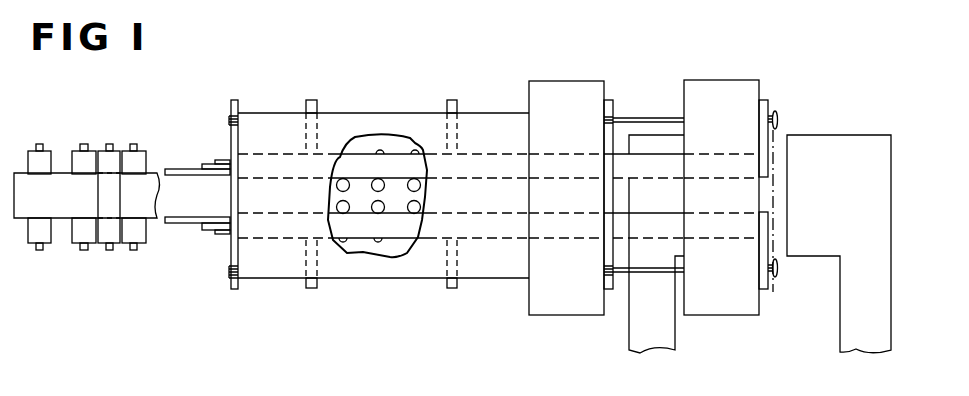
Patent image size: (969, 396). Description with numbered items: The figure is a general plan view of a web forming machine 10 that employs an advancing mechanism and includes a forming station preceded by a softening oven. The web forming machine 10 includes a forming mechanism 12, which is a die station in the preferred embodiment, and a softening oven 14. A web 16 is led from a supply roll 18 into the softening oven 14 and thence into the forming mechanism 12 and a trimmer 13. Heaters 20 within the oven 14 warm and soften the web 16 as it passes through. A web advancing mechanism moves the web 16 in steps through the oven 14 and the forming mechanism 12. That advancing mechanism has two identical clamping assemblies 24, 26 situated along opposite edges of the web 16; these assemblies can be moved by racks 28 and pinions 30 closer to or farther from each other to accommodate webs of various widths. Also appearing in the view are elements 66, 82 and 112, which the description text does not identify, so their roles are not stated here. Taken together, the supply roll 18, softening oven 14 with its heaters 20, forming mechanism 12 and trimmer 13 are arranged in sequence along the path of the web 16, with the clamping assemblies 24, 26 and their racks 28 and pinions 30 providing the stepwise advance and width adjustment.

The web forming machine 10 is at (256, 46).
The forming mechanism 12 is at (533, 78).
The trimmer 13 is at (728, 74).
The softening oven 14 is at (273, 107).
The web 16 is at (63, 178).
The supply roll 18 is at (30, 230).
The heaters 20 is at (421, 204).
The clamping assembly 24 is at (398, 226).
The clamping assembly 26 is at (398, 166).
The racks 28 is at (232, 100).
The pinions 30 is at (230, 118).
The bracket 66 is at (222, 160).
The guide plate 82 is at (170, 171).
The support plate 112 is at (206, 166).